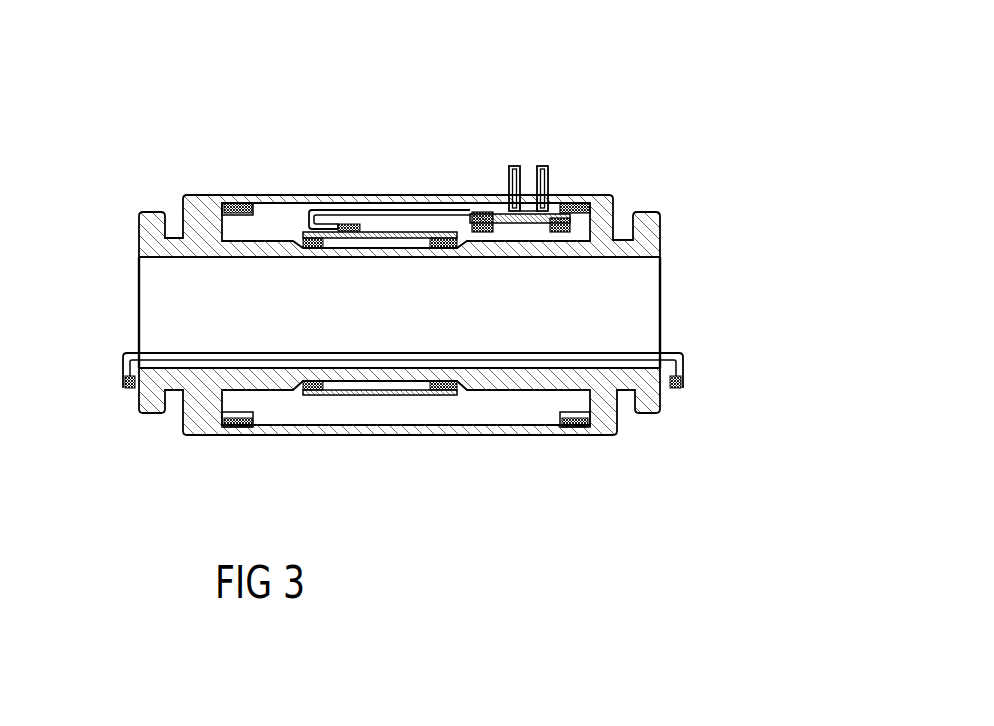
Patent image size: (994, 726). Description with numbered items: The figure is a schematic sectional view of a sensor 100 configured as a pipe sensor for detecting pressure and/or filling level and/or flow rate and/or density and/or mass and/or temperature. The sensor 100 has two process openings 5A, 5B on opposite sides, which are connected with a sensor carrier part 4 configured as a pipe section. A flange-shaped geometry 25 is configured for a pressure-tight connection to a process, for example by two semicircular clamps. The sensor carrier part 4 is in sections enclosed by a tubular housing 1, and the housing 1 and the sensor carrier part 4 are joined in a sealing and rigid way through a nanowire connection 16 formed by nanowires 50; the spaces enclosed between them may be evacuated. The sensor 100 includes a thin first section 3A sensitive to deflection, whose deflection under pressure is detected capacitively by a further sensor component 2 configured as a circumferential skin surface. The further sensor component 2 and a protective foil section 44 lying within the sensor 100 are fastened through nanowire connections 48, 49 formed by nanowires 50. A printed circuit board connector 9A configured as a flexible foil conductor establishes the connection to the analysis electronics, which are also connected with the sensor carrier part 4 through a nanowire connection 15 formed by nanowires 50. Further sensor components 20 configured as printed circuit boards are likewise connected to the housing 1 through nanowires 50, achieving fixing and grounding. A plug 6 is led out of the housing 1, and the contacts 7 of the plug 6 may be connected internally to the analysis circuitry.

The sensor 100 is at (713, 130).
The housing 1 is at (272, 437).
The further sensor component 2 is at (370, 197).
The first section 3A is at (352, 357).
The sensor carrier part 4 is at (603, 415).
The process opening 5A is at (648, 300).
The process opening 5B is at (150, 300).
The plug 6 is at (512, 164).
The contacts 7 is at (530, 213).
The printed circuit board connector 9A is at (427, 197).
The nanowire connection 15 is at (557, 207).
The nanowire connection 16 is at (233, 197).
The further sensor components 20 is at (560, 193).
The flange-shaped geometry 25 is at (660, 212).
The protective foil section 44 is at (683, 368).
The nanowire connection 48 is at (683, 383).
The nanowire connection 49 is at (293, 197).
The nanowires 50 is at (475, 297).